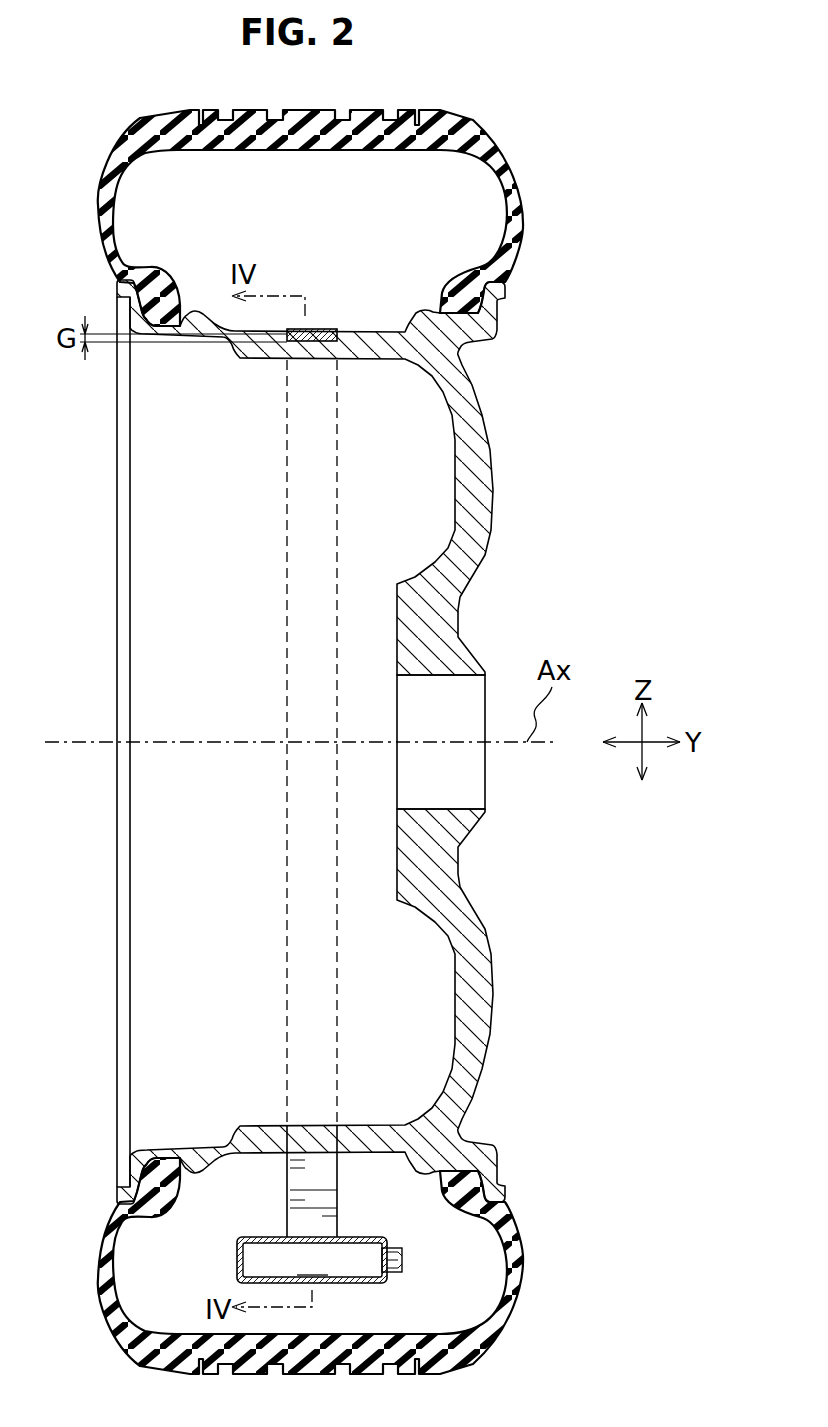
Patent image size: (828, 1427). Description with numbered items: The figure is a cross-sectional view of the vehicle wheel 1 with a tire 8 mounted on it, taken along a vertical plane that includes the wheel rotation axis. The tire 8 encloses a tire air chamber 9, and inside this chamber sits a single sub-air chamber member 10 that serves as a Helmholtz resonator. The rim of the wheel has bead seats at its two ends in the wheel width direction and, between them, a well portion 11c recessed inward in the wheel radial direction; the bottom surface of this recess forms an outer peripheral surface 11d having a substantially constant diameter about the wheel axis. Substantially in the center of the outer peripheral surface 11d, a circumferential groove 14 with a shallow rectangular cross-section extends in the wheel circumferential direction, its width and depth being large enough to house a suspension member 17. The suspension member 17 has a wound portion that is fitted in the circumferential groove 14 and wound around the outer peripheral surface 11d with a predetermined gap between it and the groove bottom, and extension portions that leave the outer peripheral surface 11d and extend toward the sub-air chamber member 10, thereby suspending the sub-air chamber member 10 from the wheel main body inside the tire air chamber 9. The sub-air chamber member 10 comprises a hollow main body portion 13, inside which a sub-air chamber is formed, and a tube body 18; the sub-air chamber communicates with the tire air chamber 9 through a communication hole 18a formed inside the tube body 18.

The vehicle wheel 1 is at (525, 130).
The tire 8 is at (520, 203).
The tire air chamber 9 is at (318, 229).
The sub-air chamber member 10 is at (226, 1259).
The well portion 11c is at (373, 332).
The outer peripheral surface 11d is at (446, 275).
The main body portion 13 is at (362, 1284).
The circumferential groove 14 is at (337, 500).
The suspension member 17 is at (320, 330).
The tube body 18 is at (393, 1248).
The communication hole 18a is at (402, 1262).